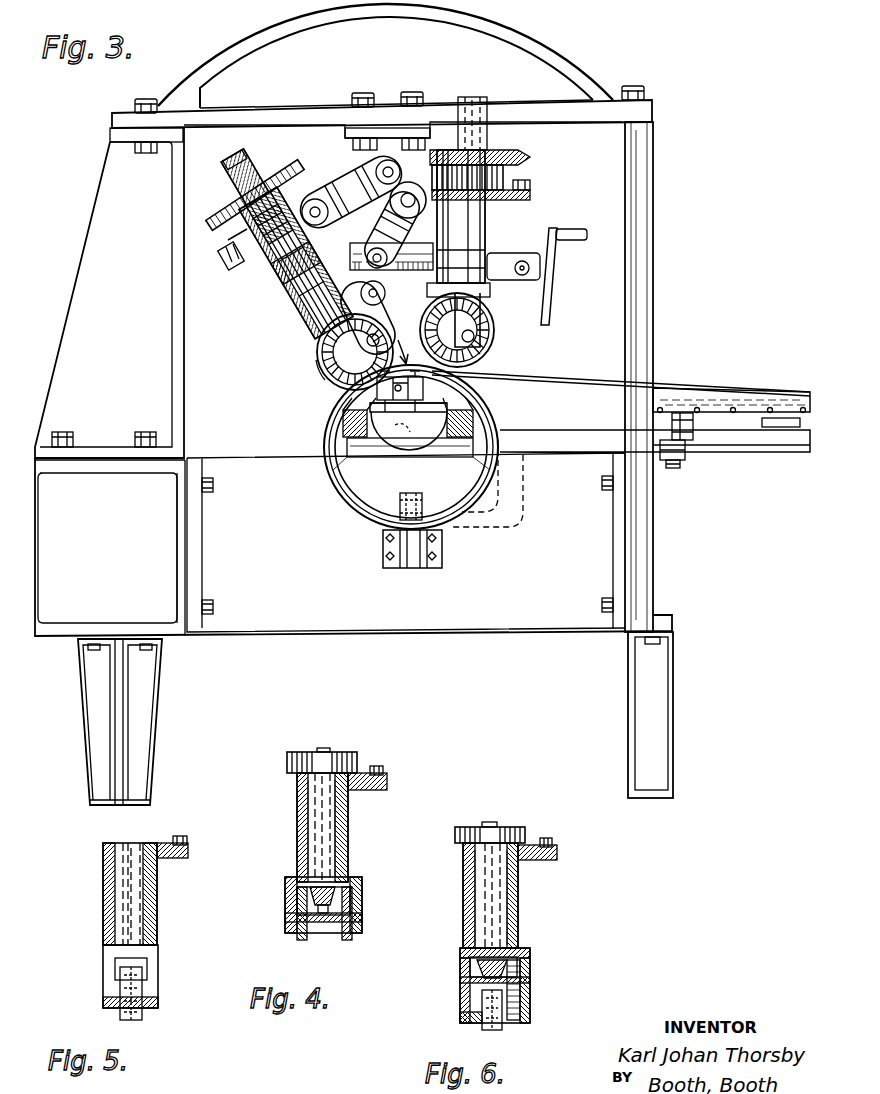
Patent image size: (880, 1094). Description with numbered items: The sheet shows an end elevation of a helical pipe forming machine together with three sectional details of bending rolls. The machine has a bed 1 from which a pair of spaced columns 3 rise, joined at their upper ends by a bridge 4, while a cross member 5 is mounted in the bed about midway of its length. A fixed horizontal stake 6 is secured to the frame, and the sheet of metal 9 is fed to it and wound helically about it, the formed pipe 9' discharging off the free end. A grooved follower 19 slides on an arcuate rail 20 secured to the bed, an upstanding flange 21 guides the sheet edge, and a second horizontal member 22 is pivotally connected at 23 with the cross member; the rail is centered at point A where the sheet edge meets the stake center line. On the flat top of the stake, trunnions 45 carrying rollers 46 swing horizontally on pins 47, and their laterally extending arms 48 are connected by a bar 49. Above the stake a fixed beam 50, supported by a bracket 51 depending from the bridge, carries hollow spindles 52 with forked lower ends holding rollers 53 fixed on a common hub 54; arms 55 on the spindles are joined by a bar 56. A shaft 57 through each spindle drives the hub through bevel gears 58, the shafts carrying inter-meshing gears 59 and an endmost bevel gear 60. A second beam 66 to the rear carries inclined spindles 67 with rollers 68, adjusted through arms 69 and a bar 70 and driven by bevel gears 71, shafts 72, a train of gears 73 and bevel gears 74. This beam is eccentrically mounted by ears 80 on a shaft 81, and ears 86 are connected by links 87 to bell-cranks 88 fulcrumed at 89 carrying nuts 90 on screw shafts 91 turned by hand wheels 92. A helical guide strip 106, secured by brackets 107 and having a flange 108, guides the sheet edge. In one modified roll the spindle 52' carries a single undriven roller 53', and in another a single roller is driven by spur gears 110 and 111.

In FIG. 3, the bed 1 is at (670, 561).
In FIG. 3, the columns 3 is at (676, 189).
In FIG. 3, the bridge 4 is at (385, 56).
In FIG. 3, the cross member 5 is at (406, 542).
In FIG. 3, the stake 6 is at (424, 450).
In FIG. 3, the sheet of metal 9 is at (621, 377).
In FIG. 3, the formed pipe 9' is at (408, 449).
In FIG. 3, the grooved follower 19 is at (685, 413).
In FIG. 3, the arcuate rail 20 is at (672, 468).
In FIG. 3, the upstanding flange 21 is at (752, 392).
In FIG. 3, the second horizontal member 22 is at (731, 452).
In FIG. 3, the pivotal connection 23 is at (372, 540).
In FIG. 3, the trunnions 45 is at (423, 387).
In FIG. 3, the roller 46 is at (385, 398).
In FIG. 3, the pin 47 is at (408, 426).
In FIG. 3, the laterally extending arms 48 is at (370, 412).
In FIG. 3, the longitudinally disposed bar 49 is at (395, 395).
In FIG. 3, the beam 50 is at (470, 231).
In FIG. 5, the beam 50 is at (157, 897).
In FIG. 4, the beam 50 is at (348, 843).
In FIG. 6, the beam 50 is at (518, 903).
In FIG. 3, the fixed bracket 51 is at (375, 138).
In FIG. 3, the hollow spindles 52 is at (489, 320).
In FIG. 4, the hollow spindles 52 is at (347, 827).
In FIG. 5, the spindle 52' is at (100, 894).
In FIG. 3, the rollers 53 is at (474, 330).
In FIG. 4, the rollers 53 is at (319, 923).
In FIG. 5, the single roller 53' is at (145, 984).
In FIG. 4, the shaft or hub 54 is at (314, 920).
In FIG. 3, the arms 55 is at (530, 196).
In FIG. 5, the arms 55 is at (158, 843).
In FIG. 4, the arms 55 is at (387, 785).
In FIG. 6, the arms 55 is at (550, 848).
In FIG. 3, the longitudinally disposed bar 56 is at (530, 185).
In FIG. 5, the longitudinally disposed bar 56 is at (184, 838).
In FIG. 4, the longitudinally disposed bar 56 is at (383, 770).
In FIG. 6, the longitudinally disposed bar 56 is at (545, 838).
In FIG. 3, the shaft 57 is at (472, 123).
In FIG. 4, the shaft 57 is at (315, 798).
In FIG. 3, the bevel gears 58 is at (482, 316).
In FIG. 4, the bevel gears 58 is at (330, 922).
In FIG. 6, the bevel gears 58 is at (512, 952).
In FIG. 3, the inter-meshing gears 59 is at (503, 178).
In FIG. 4, the inter-meshing gears 59 is at (302, 752).
In FIG. 6, the inter-meshing gears 59 is at (518, 827).
In FIG. 3, the bevel gear 60 is at (520, 152).
In FIG. 3, the second beam 66 is at (290, 316).
In FIG. 3, the spindles 67 is at (300, 345).
In FIG. 3, the rollers 68 is at (318, 380).
In FIG. 3, the arms 69 is at (232, 282).
In FIG. 3, the longitudinally disposed bar 70 is at (222, 262).
In FIG. 3, the bevel gears 71 is at (316, 366).
In FIG. 3, the shafts 72 is at (275, 282).
In FIG. 3, the train of gears 73 is at (226, 242).
In FIG. 3, the bevel gears 74 is at (226, 204).
In FIG. 3, the ears 80 is at (340, 322).
In FIG. 3, the longitudinal shaft 81 is at (385, 293).
In FIG. 3, the ears 86 is at (315, 199).
In FIG. 3, the links 87 is at (343, 185).
In FIG. 3, the bell-cranks 88 is at (410, 182).
In FIG. 3, the fulcrum 89 is at (400, 204).
In FIG. 3, the nuts 90 is at (370, 255).
In FIG. 3, the screw shafts 91 is at (414, 258).
In FIG. 3, the hand wheels 92 is at (552, 268).
In FIG. 3, the rigid strip 106 is at (366, 474).
In FIG. 3, the brackets 107 is at (372, 466).
In FIG. 3, the flange 108 is at (336, 498).
In FIG. 6, the spur gear 110 is at (530, 1000).
In FIG. 6, the spur gear 111 is at (520, 967).
In FIG. 3, the point A is at (400, 344).